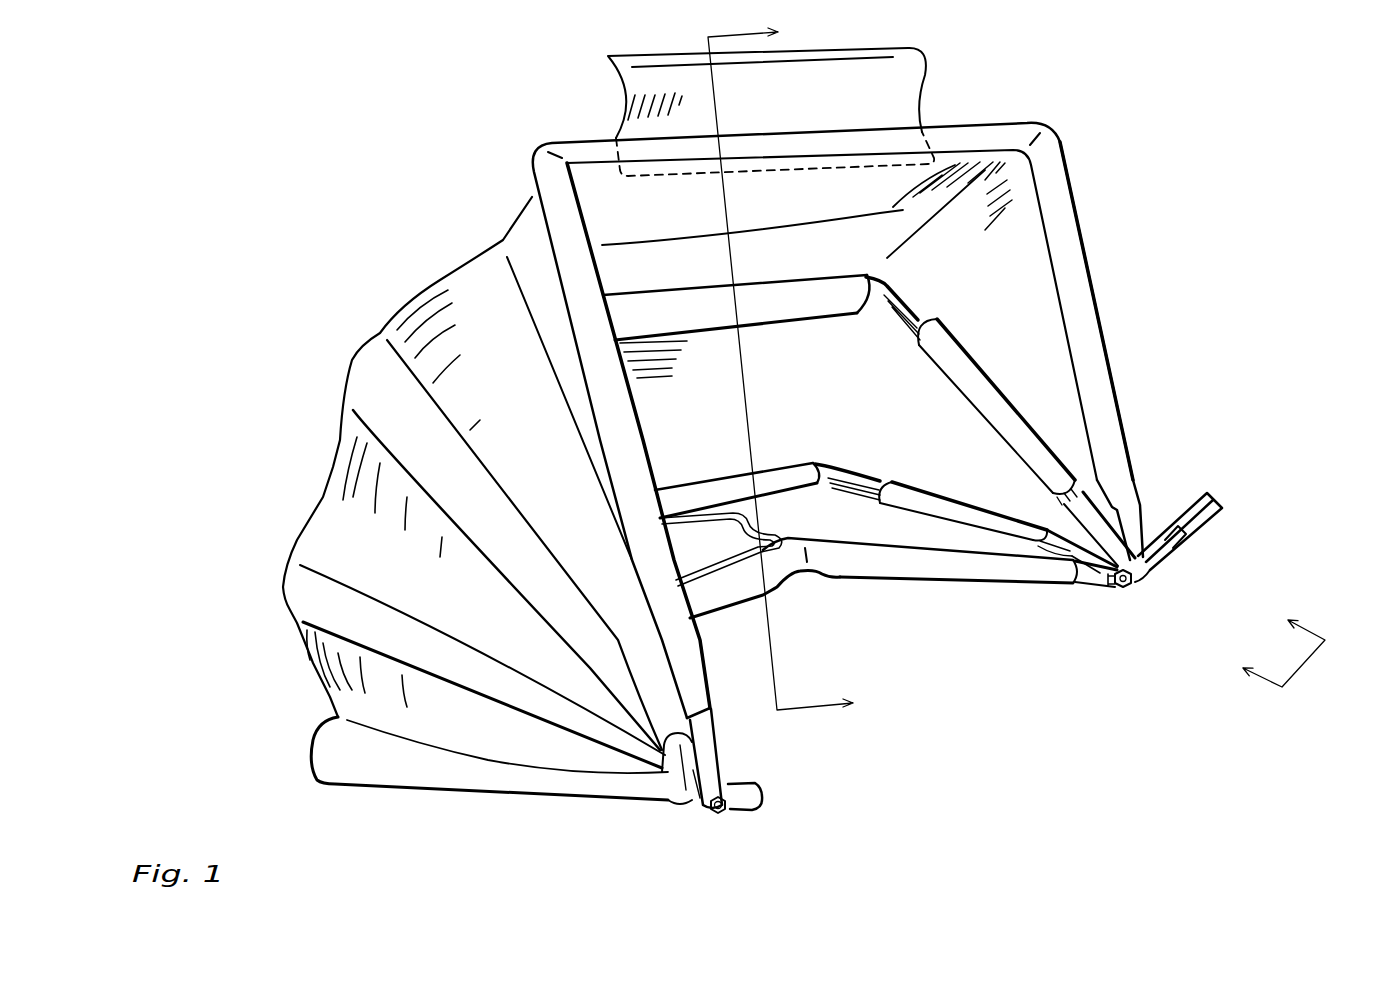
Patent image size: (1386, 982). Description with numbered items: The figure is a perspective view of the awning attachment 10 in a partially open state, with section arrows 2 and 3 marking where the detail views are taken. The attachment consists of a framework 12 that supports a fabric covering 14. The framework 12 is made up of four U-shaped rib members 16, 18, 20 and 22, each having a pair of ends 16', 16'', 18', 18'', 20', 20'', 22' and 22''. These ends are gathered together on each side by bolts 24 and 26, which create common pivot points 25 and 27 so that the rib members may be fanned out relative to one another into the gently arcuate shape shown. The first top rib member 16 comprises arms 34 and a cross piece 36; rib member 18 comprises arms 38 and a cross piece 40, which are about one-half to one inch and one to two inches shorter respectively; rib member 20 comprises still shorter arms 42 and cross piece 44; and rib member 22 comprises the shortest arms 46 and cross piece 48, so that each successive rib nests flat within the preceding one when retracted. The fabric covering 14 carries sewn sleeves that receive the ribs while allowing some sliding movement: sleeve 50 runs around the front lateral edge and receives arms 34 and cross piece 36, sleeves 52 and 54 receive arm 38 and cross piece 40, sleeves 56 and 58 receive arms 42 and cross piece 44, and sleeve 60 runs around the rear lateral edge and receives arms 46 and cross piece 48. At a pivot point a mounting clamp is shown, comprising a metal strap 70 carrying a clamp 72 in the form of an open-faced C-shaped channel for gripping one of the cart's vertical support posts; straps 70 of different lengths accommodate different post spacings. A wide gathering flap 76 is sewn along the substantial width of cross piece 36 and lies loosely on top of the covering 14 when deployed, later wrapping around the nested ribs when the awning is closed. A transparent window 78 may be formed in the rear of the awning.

The section line 2- 2 is at (791, 367).
The section line 3- 3 is at (1271, 643).
The awning attachment 10 is at (366, 270).
The framework 12 is at (1122, 278).
The fabric covering 14 is at (382, 544).
The rib member 16 is at (833, 420).
The end of rib member 16' is at (1137, 501).
The end of rib member 16'' is at (728, 758).
The rib member 18 is at (893, 327).
The end of rib member 18' is at (1067, 462).
The end of rib member 18'' is at (666, 801).
The rib member 20 is at (847, 469).
The end of rib member 20' is at (1055, 526).
The end of rib member 20'' is at (649, 784).
The rib member 22 is at (880, 594).
The end of rib member 22' is at (1084, 589).
The end of rib member 22'' is at (705, 814).
The bolt 24 is at (1125, 590).
The pivot point 25 is at (1170, 577).
The bolt 26 is at (725, 817).
The pivot point 27 is at (767, 766).
The arms 34 is at (627, 438).
The cross piece 36 is at (570, 135).
The arms 38 is at (470, 504).
The cross piece 40 is at (763, 310).
The arms 42 is at (370, 627).
The cross piece 44 is at (762, 468).
The arms 46 is at (463, 772).
The cross piece 48 is at (710, 593).
The sleeve 50 is at (1107, 352).
The sleeve 52 is at (977, 362).
The sleeve 54 is at (640, 307).
The sleeve 56 is at (903, 478).
The sleeve 58 is at (693, 500).
The sleeve 60 is at (848, 573).
The metal strap 70 is at (1180, 552).
The clamp 72 is at (1200, 498).
The gathering flap 76 is at (913, 108).
The window 78 is at (732, 532).